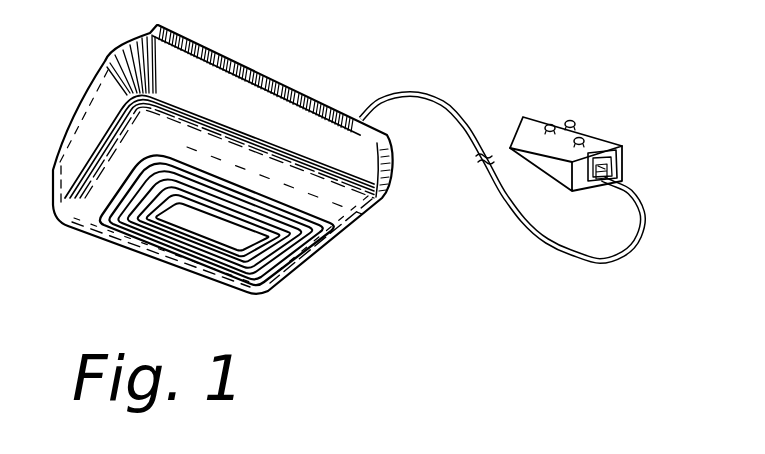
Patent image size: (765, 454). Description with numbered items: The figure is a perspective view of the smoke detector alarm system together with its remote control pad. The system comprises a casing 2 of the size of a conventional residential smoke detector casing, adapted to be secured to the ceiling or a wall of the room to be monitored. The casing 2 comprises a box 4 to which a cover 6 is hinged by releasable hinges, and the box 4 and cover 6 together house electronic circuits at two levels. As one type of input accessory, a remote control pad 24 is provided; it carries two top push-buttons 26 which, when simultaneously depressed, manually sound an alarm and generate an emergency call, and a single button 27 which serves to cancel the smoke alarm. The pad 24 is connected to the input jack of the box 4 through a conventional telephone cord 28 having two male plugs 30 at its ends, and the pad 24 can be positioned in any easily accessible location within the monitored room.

The casing 2 is at (356, 219).
The box 4 is at (293, 90).
The cover 6 is at (310, 255).
The remote control pad 24 is at (591, 147).
The top push-buttons 26 is at (570, 121).
The single button 27 is at (585, 139).
The telephone cord 28 is at (557, 246).
The male plugs 30 is at (619, 169).